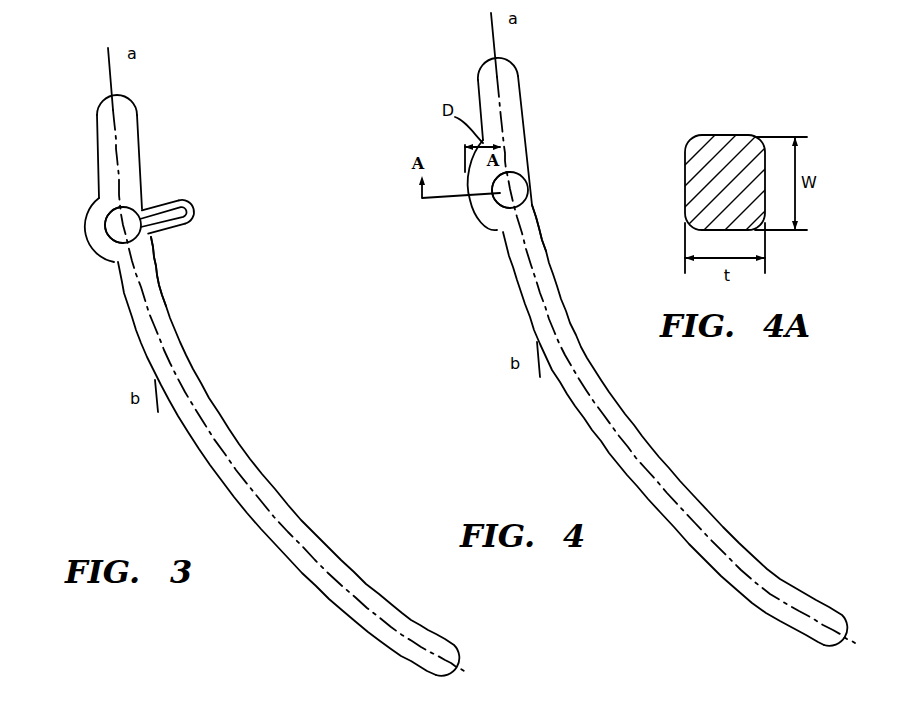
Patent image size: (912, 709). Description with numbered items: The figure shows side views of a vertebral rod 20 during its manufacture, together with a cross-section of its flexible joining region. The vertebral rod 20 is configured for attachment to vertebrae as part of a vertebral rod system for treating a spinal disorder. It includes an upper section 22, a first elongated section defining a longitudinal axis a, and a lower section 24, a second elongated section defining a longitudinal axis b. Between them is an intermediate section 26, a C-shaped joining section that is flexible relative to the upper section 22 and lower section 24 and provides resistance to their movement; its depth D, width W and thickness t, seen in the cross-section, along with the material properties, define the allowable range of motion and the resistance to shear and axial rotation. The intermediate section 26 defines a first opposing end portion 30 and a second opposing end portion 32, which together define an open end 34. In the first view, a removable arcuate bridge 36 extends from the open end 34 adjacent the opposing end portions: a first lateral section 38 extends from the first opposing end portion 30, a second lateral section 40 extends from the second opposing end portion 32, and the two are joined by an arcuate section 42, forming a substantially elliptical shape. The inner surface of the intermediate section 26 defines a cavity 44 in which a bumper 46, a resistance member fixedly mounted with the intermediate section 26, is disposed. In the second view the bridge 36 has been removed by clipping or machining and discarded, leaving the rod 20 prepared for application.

In FIG. 3, the vertebral rod 20 is at (123, 497).
In FIG. 4, the vertebral rod 20 is at (475, 463).
In FIG. 3, the upper section 22 is at (110, 173).
In FIG. 4, the upper section 22 is at (507, 122).
In FIG. 3, the lower section 24 is at (287, 563).
In FIG. 4, the lower section 24 is at (670, 527).
In FIG. 3, the intermediate section 26 is at (100, 243).
In FIG. 4, the intermediate section 26 is at (477, 202).
In FIG. 3, the first opposing end portion 30 is at (138, 197).
In FIG. 4, the first opposing end portion 30 is at (524, 162).
In FIG. 3, the second opposing end portion 32 is at (152, 240).
In FIG. 4, the second opposing end portion 32 is at (537, 200).
In FIG. 3, the open end 34 is at (117, 223).
In FIG. 4, the open end 34 is at (530, 184).
In FIG. 3, the arcuate bridge 36 is at (208, 200).
In FIG. 3, the first lateral section 38 is at (172, 195).
In FIG. 3, the second lateral section 40 is at (185, 228).
In FIG. 3, the arcuate section 42 is at (196, 213).
In FIG. 3, the cavity 44 is at (122, 243).
In FIG. 4, the cavity 44 is at (513, 198).
In FIG. 3, the bumper 46 is at (112, 224).
In FIG. 4, the bumper 46 is at (498, 203).